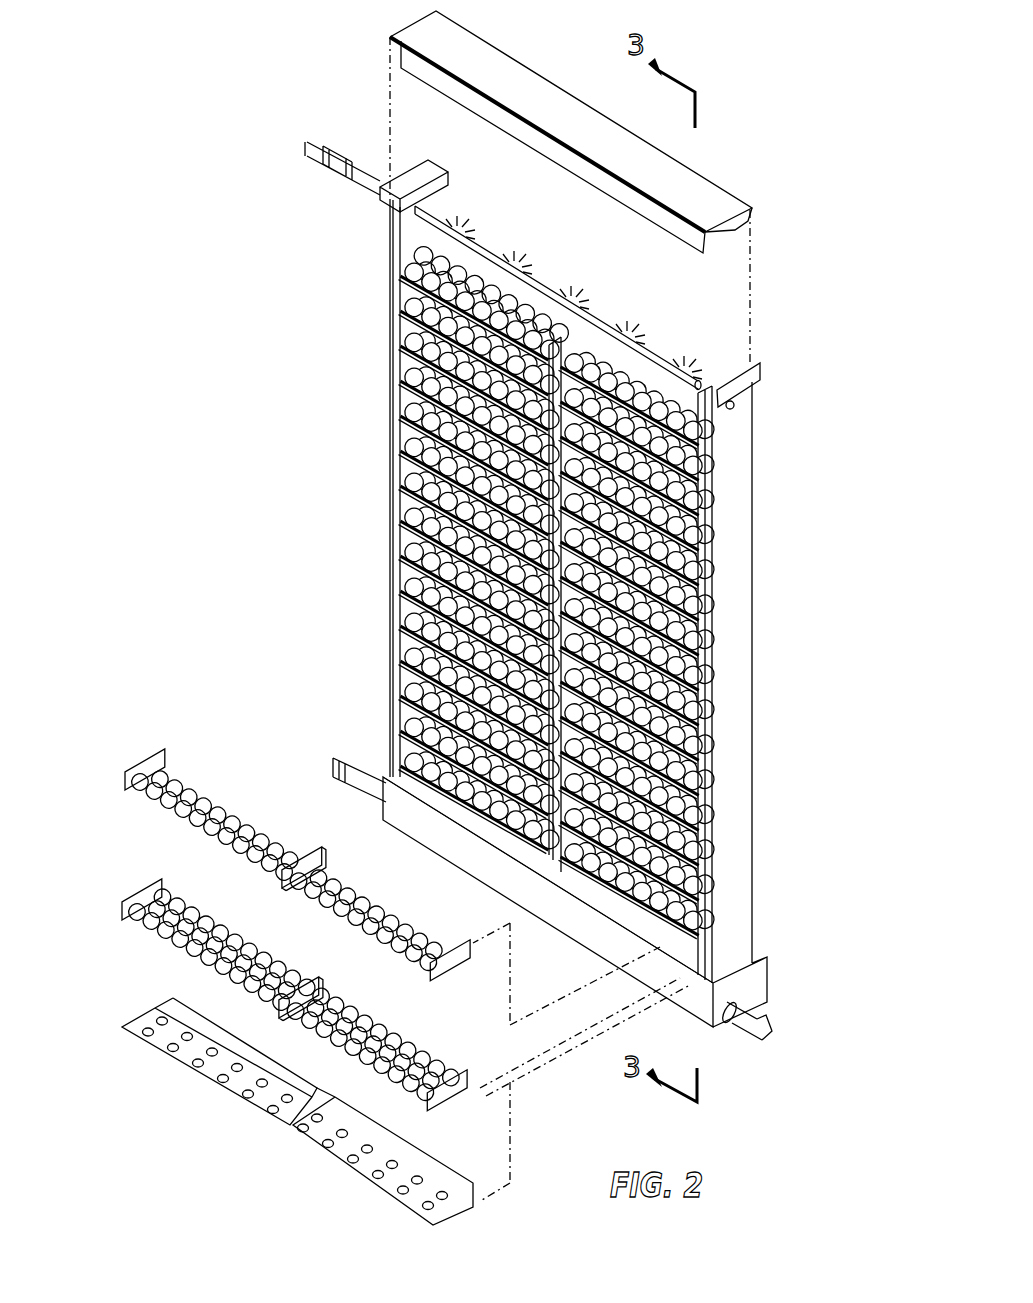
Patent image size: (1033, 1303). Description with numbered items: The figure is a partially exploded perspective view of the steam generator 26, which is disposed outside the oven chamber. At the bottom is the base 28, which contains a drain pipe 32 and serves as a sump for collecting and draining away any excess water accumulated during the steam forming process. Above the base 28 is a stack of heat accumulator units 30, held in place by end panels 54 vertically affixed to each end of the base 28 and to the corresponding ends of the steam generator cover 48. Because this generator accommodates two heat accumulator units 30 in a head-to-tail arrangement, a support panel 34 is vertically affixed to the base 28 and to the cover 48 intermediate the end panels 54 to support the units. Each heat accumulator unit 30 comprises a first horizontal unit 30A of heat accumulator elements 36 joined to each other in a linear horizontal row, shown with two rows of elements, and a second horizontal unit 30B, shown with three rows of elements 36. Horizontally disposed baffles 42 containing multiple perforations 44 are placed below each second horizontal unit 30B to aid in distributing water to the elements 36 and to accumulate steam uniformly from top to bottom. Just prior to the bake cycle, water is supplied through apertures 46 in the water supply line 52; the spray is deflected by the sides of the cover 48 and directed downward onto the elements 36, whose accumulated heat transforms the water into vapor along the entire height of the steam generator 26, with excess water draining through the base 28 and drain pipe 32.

The steam generator 26 is at (532, 527).
The base 28 is at (755, 978).
The heat accumulator units 30 is at (261, 908).
The first horizontal unit 30A is at (150, 752).
The second horizontal unit 30B is at (153, 885).
The drain pipe 32 is at (764, 1013).
The support panels 34 is at (520, 868).
The heat accumulator elements 36 is at (195, 793).
The baffles 42 is at (153, 1047).
The perforations 44 is at (287, 1125).
The apertures 46 is at (582, 312).
The steam generator cover 48 is at (700, 190).
The water supply line 52 is at (667, 360).
The end panels 54 is at (753, 645).